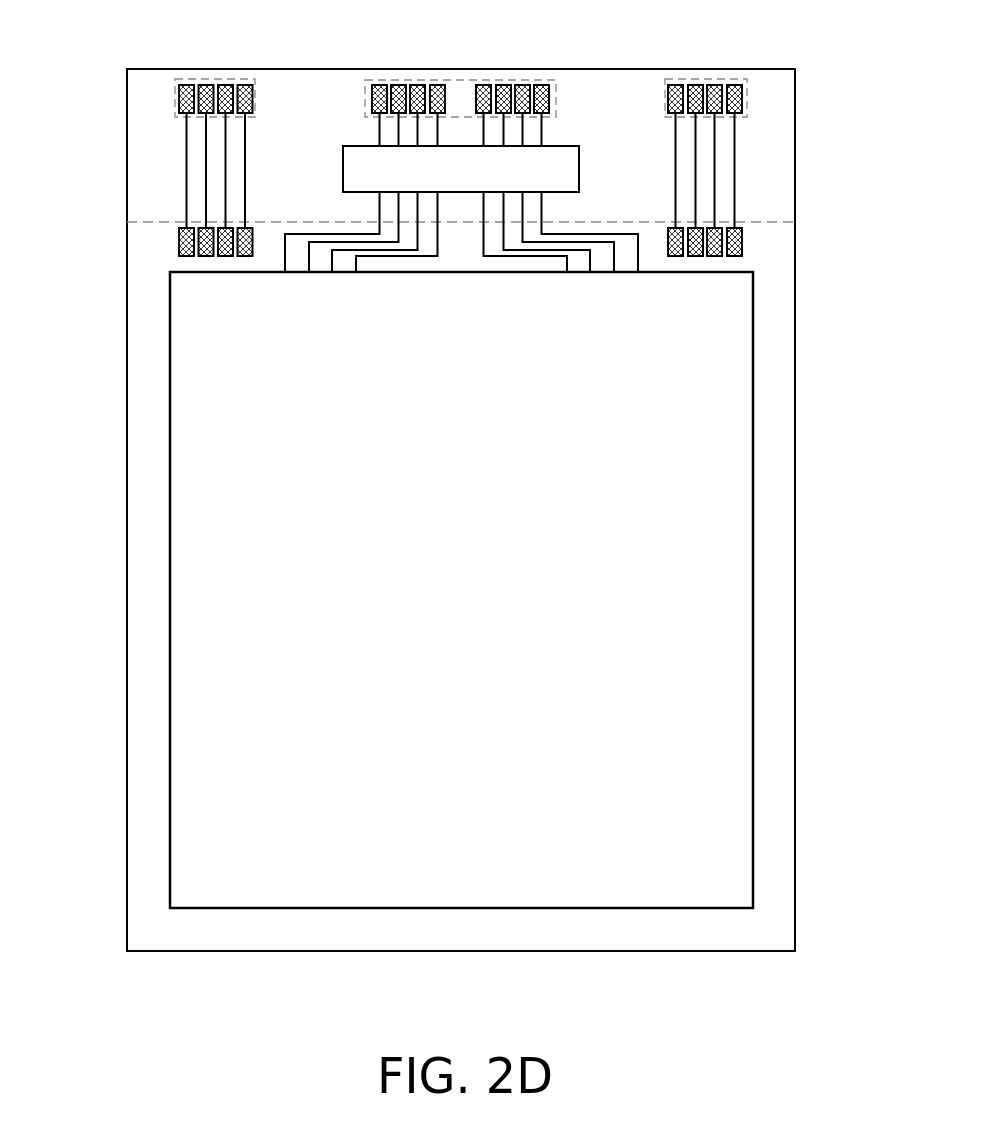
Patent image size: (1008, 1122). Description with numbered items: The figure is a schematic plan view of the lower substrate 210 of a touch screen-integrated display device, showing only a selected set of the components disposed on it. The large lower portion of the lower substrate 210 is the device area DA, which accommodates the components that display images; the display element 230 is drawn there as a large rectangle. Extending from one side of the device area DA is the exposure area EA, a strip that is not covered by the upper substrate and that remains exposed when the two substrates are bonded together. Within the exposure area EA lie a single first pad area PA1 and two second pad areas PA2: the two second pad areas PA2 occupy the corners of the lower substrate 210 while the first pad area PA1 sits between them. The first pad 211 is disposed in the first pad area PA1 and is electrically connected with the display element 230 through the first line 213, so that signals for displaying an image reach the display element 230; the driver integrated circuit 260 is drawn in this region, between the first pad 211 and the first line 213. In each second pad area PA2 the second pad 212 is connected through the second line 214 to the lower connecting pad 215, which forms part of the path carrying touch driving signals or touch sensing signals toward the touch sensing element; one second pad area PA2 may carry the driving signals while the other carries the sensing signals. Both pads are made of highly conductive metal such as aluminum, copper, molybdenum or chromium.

The lower substrate 210 is at (797, 447).
The first pad 211 is at (532, 100).
The second pad 212 is at (182, 107).
The first line 213 is at (313, 234).
The second line 214 is at (187, 130).
The lower connecting pad 215 is at (180, 235).
The display element 230 is at (753, 375).
The driver integrated circuit 260 is at (343, 147).
The device area DA is at (471, 590).
The exposure area EA is at (152, 178).
The first pad area PA1 is at (462, 73).
The second pad area PA2 is at (471, 128).